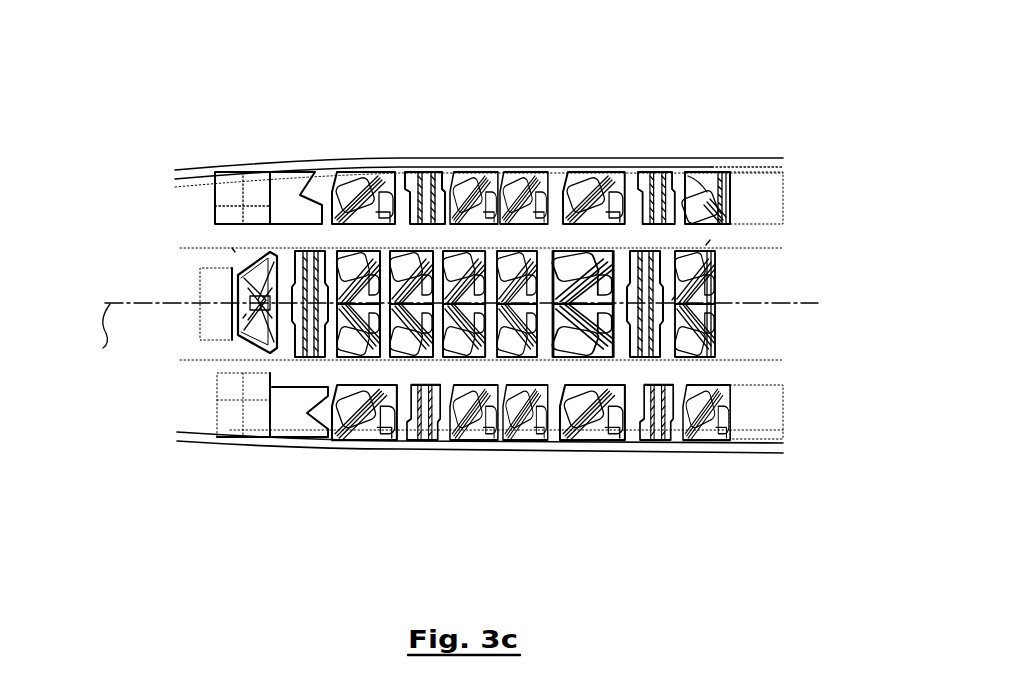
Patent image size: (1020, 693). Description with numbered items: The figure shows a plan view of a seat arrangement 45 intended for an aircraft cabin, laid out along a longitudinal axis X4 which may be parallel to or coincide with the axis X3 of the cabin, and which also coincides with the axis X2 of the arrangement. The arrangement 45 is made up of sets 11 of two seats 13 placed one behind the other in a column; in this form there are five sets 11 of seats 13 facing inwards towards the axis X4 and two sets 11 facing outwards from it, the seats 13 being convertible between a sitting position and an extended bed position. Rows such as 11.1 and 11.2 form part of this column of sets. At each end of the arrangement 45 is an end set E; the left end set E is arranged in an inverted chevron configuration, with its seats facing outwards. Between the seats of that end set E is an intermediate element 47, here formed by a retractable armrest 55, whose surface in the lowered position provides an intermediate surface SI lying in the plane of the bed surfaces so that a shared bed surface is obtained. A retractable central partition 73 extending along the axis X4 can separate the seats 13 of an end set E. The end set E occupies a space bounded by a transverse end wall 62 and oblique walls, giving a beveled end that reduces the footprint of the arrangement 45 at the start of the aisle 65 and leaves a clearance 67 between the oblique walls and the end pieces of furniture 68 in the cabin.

The arrangement of seats 45 is at (168, 126).
The intermediate element 47 is at (263, 232).
The clearance 67 is at (229, 202).
The end pieces of furniture 68 is at (215, 170).
The first seat row 11.1 is at (350, 240).
The second seat row 11.2 is at (243, 362).
The set of two seats 11 is at (684, 383).
The seat 13 is at (583, 305).
The armrest 55 is at (255, 303).
The end wall 62 is at (238, 308).
The aisle 65 is at (323, 376).
The retractable central partition 73 is at (716, 356).
The end set E is at (707, 243).
The intermediate surface SI is at (675, 296).
The axis of the arrangement X2 is at (805, 305).
The axis of the aircraft cabin X3 is at (80, 339).
The longitudinal axis X4 is at (80, 339).